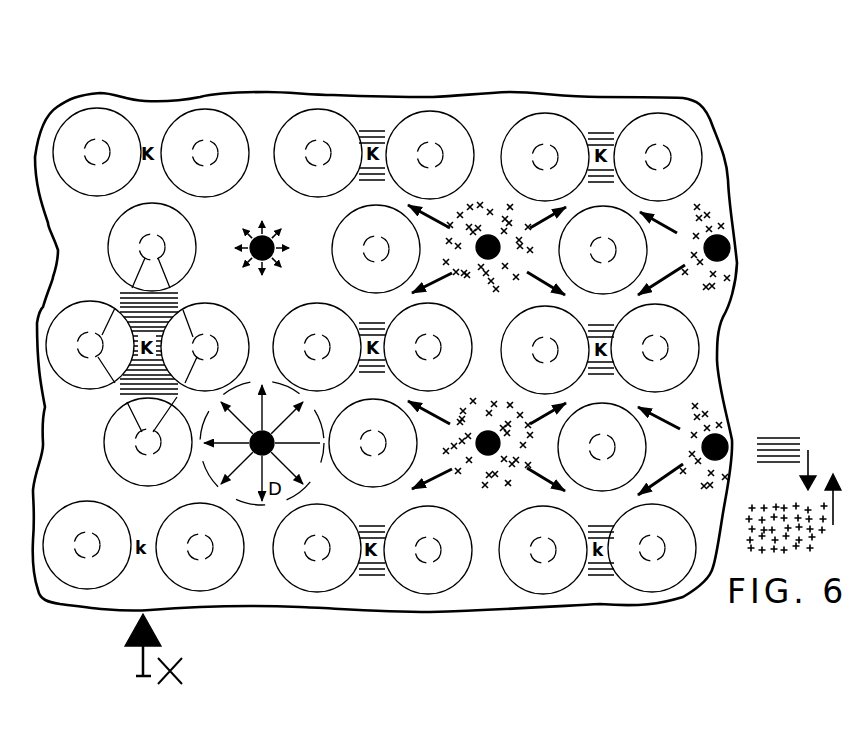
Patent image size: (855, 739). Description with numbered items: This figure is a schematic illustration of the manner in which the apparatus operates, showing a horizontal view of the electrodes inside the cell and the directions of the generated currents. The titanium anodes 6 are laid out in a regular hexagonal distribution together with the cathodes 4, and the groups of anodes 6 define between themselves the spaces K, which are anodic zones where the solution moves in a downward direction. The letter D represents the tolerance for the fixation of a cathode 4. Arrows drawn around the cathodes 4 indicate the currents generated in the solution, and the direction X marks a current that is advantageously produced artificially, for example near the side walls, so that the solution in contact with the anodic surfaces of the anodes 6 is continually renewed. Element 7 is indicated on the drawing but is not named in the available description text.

The roll 7 is at (658, 123).
The titanium anode 6 is at (665, 150).
The cathode 4 is at (728, 242).